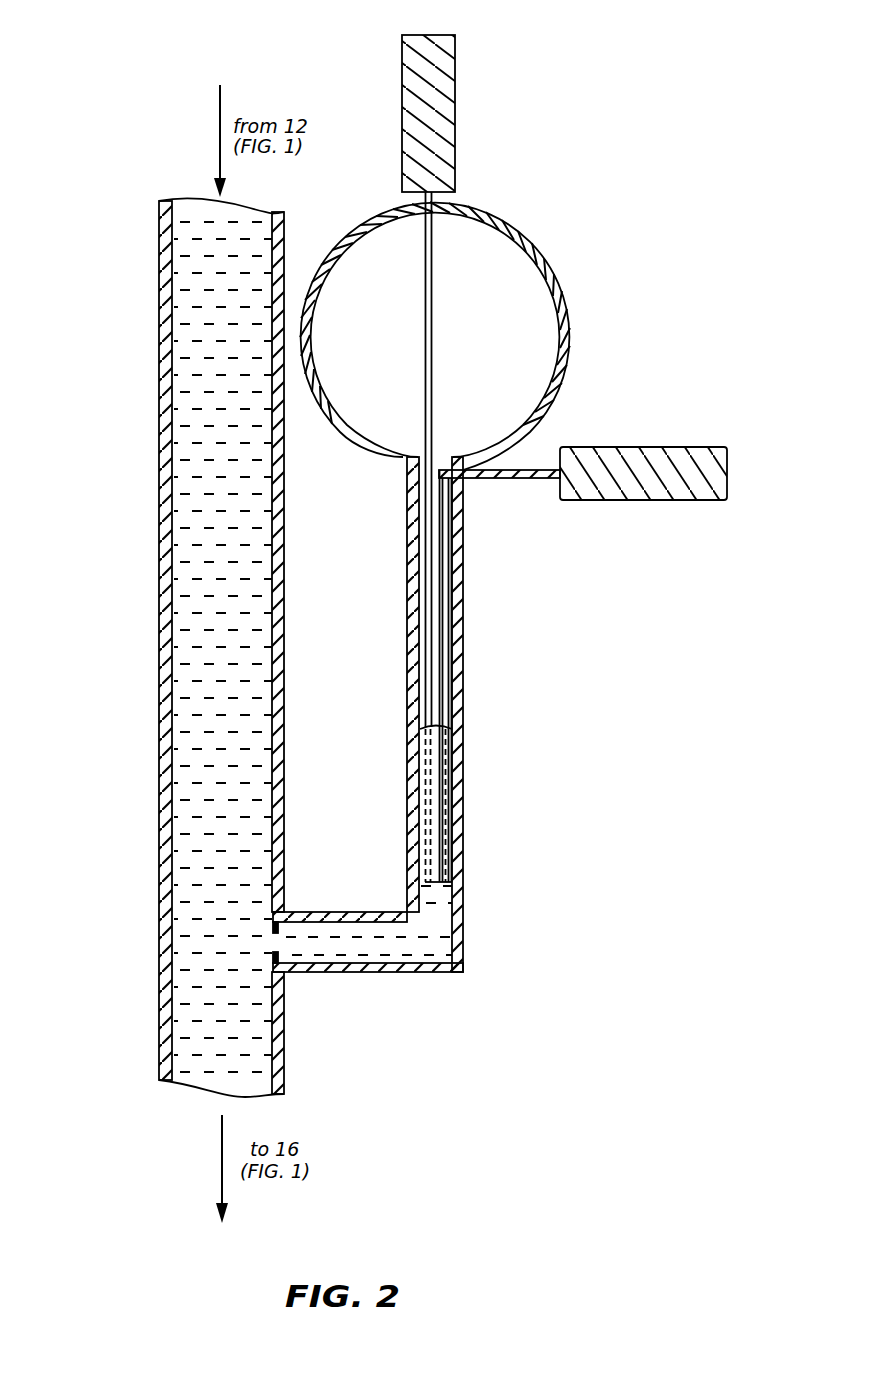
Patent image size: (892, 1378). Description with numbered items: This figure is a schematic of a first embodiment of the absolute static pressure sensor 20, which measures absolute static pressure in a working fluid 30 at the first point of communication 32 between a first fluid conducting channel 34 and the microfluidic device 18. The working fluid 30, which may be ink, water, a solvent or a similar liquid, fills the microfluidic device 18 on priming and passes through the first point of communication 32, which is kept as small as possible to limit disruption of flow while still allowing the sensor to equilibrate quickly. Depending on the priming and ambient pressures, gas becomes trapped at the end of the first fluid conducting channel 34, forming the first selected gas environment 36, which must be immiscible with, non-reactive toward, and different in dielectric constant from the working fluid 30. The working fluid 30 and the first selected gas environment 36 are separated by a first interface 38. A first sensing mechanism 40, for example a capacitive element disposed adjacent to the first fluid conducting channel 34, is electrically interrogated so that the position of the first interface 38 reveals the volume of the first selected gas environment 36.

The microfluidic device 18 is at (158, 466).
The working fluid 30 is at (207, 250).
The absolute static pressure sensor 20 is at (500, 503).
The first selected gas environment 36 is at (493, 324).
The first fluid conducting channel 34 is at (463, 882).
The first point of communication 32 is at (280, 945).
The first sensing mechanism 40 is at (445, 583).
The first interface 38 is at (450, 722).